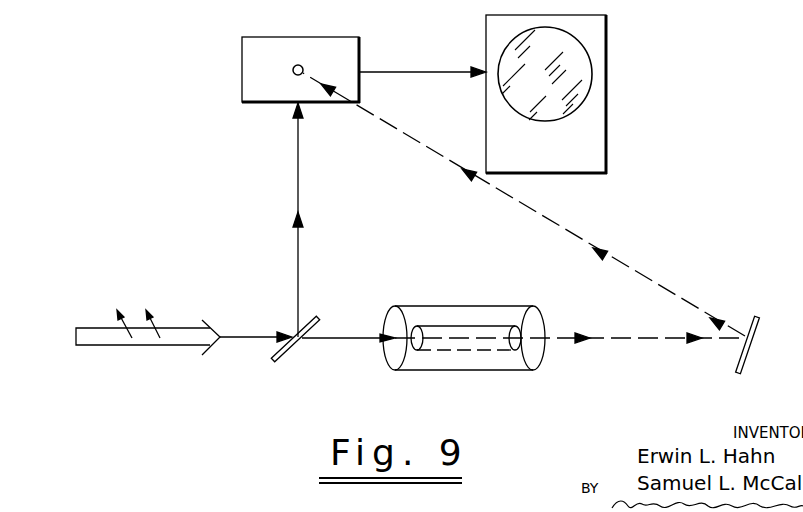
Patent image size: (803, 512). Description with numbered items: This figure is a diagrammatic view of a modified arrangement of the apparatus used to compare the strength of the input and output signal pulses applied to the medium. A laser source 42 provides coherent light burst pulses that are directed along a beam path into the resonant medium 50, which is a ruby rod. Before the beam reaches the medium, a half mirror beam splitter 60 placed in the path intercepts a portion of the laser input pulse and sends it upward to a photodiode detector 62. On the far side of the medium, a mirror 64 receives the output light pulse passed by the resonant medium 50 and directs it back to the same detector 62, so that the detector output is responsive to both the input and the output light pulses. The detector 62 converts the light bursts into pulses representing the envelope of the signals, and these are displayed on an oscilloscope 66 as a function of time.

The laser source 42 is at (100, 328).
The resonant medium 50 is at (474, 326).
The half mirror beam splitter 60 is at (312, 318).
The photodiode detector 62 is at (302, 66).
The mirror 64 is at (745, 318).
The oscilloscope 66 is at (580, 65).